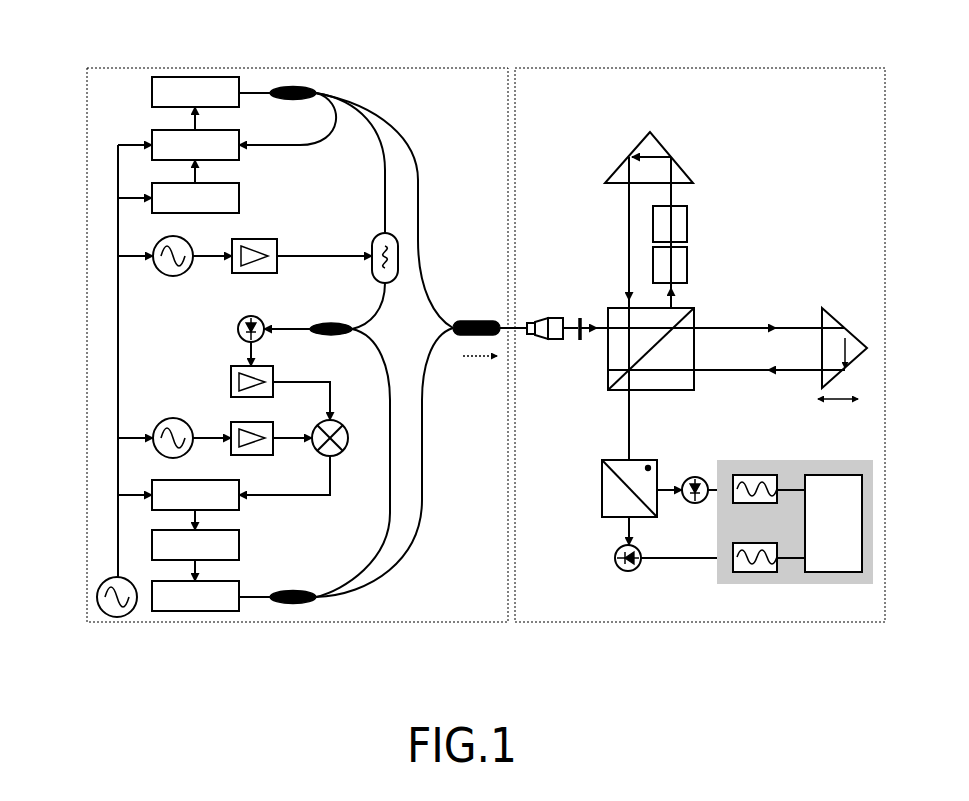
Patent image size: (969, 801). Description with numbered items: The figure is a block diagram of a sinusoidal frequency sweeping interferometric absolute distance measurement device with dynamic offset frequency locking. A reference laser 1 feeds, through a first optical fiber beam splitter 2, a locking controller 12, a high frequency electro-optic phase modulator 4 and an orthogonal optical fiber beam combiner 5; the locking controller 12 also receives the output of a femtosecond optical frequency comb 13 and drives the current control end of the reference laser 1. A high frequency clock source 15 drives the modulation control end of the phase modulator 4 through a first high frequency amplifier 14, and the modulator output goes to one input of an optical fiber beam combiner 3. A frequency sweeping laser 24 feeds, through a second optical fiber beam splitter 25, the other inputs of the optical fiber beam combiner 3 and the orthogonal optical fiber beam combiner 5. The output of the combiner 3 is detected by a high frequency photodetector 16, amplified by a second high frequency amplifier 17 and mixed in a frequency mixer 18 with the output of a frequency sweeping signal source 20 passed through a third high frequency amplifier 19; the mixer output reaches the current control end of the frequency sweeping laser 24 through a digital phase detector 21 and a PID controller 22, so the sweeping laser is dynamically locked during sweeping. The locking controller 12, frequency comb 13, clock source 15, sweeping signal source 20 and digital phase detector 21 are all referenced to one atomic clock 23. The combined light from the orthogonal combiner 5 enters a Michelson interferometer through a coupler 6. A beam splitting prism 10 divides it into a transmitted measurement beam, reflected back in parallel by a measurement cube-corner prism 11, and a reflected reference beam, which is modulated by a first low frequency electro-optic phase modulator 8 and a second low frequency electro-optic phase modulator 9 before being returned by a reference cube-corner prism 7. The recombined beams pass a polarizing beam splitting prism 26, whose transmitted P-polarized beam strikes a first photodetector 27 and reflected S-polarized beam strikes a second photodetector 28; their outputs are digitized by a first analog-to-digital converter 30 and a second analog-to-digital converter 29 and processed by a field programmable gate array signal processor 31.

The reference laser 1 is at (153, 77).
The first optical fiber beam splitter 2 is at (278, 88).
The optical fiber beam combiner 3 is at (332, 320).
The high frequency electro-optic phase modulator 4 is at (397, 233).
The orthogonal optical fiber beam combiner 5 is at (478, 320).
The coupler 6 is at (546, 318).
The reference cube-corner prism 7 is at (657, 140).
The first low frequency electro-optic phase modulator 8 is at (687, 230).
The second low frequency electro-optic phase modulator 9 is at (692, 305).
The beam splitting prism 10 is at (845, 329).
The measurement cube-corner prism 11 is at (885, 68).
The locking controller 12 is at (152, 130).
The femtosecond optical frequency comb 13 is at (152, 183).
The first high frequency amplifier 14 is at (158, 243).
The high frequency clock source 15 is at (232, 240).
The high frequency photodetector 16 is at (241, 322).
The second high frequency amplifier 17 is at (231, 367).
The frequency mixer 18 is at (315, 428).
The third high frequency amplifier 19 is at (231, 423).
The frequency sweeping signal source 20 is at (158, 424).
The digital phase detector 21 is at (152, 482).
The PID controller 22 is at (152, 536).
The atomic clock 23 is at (101, 586).
The frequency sweeping laser 24 is at (173, 611).
The second optical fiber beam splitter 25 is at (280, 603).
The polarizing beam splitting prism 26 is at (610, 518).
The first photodetector 27 is at (623, 573).
The second photodetector 28 is at (690, 503).
The second analog-to-digital converter 29 is at (717, 572).
The first analog-to-digital converter 30 is at (747, 503).
The field programmable gate array (FPGA) signal processor 31 is at (800, 584).